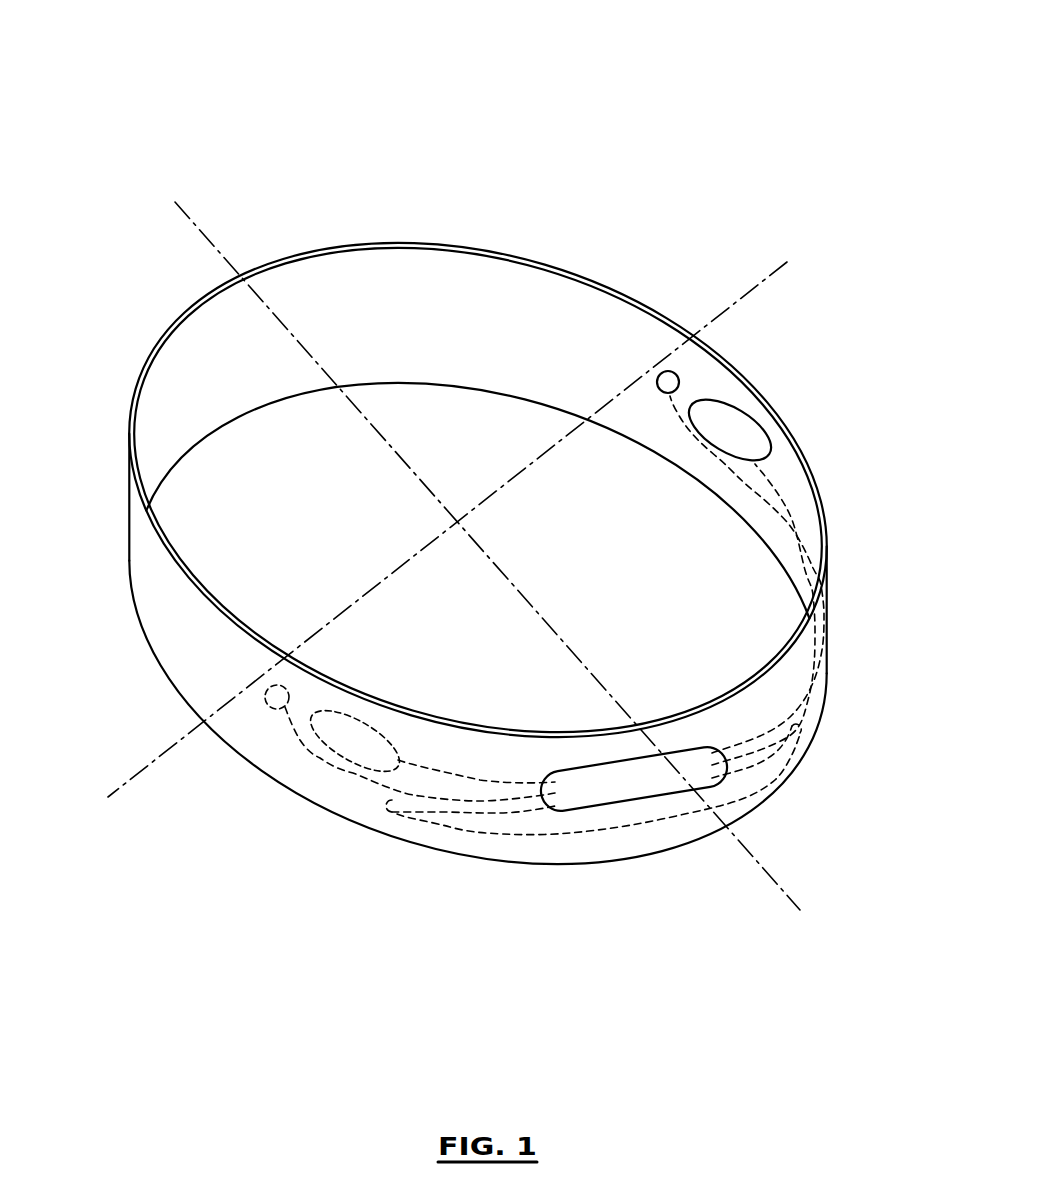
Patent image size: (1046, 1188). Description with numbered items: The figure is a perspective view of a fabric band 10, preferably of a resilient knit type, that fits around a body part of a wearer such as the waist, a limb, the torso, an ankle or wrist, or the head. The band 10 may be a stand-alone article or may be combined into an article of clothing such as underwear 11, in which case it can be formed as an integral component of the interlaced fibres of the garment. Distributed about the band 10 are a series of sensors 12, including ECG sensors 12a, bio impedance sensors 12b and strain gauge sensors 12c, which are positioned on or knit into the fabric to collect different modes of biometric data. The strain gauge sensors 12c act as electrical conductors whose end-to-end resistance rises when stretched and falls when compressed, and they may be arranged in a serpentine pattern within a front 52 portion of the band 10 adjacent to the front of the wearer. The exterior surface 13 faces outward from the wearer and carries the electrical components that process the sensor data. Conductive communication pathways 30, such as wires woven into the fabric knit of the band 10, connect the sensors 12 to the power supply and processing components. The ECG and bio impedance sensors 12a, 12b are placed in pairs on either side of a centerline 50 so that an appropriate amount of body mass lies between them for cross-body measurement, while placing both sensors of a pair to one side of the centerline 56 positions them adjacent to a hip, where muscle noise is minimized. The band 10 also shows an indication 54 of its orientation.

The fabric band 10 is at (502, 553).
The underwear 11 is at (571, 300).
The sensors 12 is at (543, 616).
The ECG sensors 12a is at (760, 432).
The bio impedance sensors 12b is at (678, 375).
The strain gauge sensors 12c is at (767, 768).
The exterior surface 13 is at (531, 737).
The conductive communication pathways 30 is at (797, 528).
The centerline 50 is at (752, 856).
The front portion 52 is at (545, 866).
The top side 54 is at (346, 192).
The centerline 56 is at (126, 778).